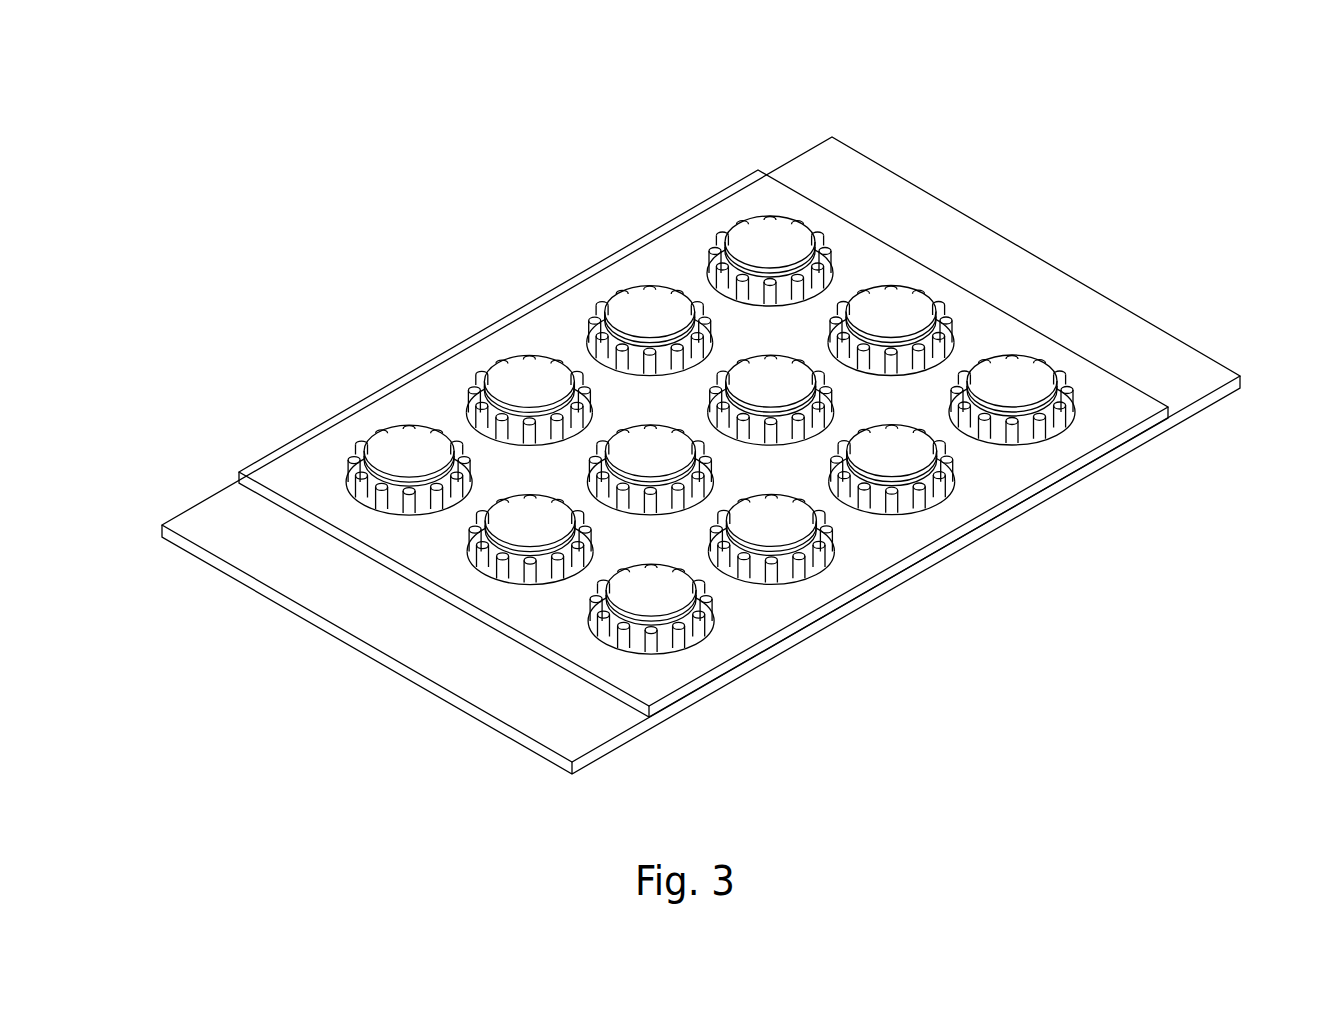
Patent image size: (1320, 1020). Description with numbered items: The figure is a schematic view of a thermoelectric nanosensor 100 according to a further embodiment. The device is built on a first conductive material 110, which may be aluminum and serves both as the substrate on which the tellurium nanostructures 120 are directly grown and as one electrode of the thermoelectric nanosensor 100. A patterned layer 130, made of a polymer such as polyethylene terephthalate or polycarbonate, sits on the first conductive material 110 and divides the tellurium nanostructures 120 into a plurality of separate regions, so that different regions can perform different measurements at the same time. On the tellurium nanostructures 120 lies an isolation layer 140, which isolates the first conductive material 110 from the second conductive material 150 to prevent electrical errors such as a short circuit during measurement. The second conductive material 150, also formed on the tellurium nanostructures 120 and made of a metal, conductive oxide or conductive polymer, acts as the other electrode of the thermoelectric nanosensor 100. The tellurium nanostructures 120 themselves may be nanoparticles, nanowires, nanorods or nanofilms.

The thermoelectric nanosensor 100 is at (277, 70).
The first conductive material 110 is at (1088, 298).
The tellurium nanostructures 120 is at (822, 250).
The patterned layer 130 is at (892, 262).
The isolation layer 140 is at (712, 272).
The second conductive material 150 is at (748, 230).